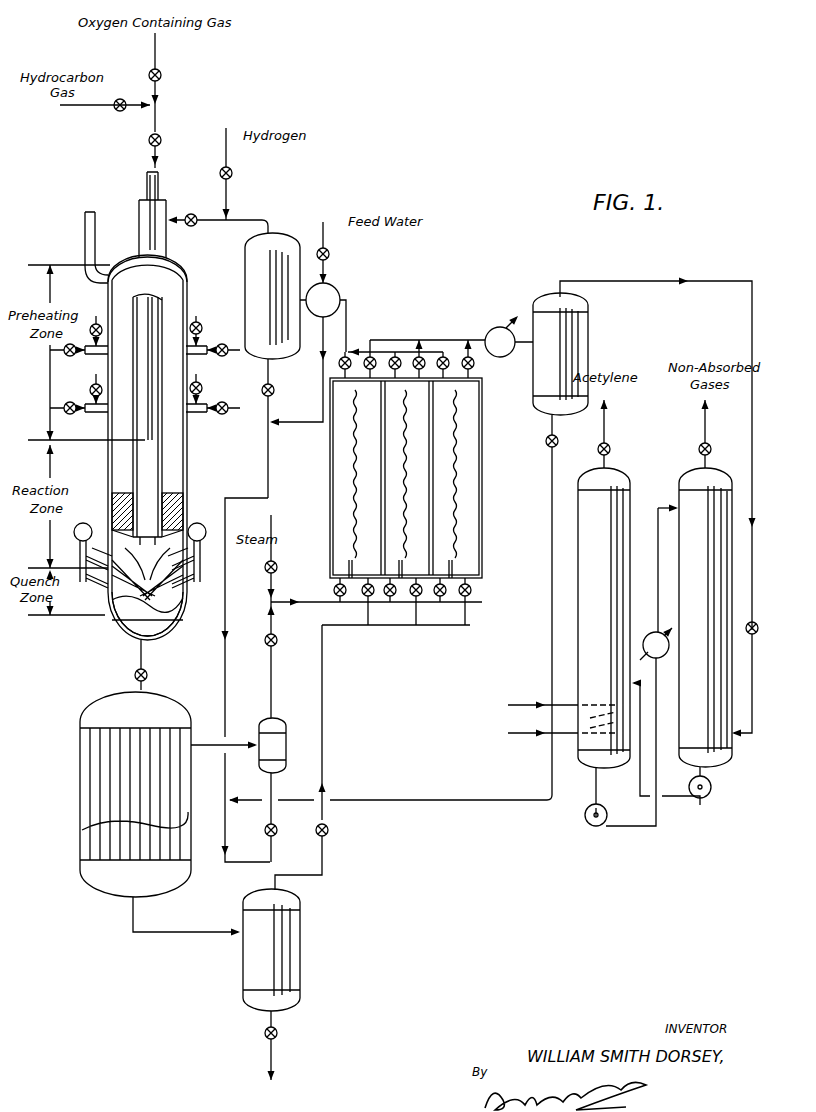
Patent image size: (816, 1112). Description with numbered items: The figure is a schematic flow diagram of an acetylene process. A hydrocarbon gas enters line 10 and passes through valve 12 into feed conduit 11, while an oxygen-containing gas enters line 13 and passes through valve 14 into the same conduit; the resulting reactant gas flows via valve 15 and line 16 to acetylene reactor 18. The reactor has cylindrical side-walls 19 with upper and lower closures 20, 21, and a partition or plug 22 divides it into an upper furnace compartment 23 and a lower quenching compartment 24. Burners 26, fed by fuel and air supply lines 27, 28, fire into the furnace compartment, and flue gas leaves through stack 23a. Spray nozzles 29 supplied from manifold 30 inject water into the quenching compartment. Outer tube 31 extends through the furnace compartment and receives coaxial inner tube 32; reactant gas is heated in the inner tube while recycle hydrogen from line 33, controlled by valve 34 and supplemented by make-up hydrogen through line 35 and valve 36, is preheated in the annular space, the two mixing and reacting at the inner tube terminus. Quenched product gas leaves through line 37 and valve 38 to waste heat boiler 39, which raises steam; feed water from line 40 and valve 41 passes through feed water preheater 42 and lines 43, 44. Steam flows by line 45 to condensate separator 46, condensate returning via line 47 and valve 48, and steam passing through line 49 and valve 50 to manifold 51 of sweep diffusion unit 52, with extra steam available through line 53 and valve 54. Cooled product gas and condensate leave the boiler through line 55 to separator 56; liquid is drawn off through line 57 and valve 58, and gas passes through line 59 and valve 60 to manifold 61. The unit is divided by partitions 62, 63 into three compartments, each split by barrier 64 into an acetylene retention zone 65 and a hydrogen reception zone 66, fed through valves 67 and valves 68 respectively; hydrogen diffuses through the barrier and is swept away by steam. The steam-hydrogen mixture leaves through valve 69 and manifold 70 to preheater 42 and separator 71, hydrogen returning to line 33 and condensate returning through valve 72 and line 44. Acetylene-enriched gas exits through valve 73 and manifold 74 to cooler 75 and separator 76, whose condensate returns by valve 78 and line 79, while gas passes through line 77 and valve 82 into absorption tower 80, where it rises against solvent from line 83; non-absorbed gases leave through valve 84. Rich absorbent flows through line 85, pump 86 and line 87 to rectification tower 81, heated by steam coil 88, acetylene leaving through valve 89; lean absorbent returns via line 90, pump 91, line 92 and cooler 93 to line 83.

The line 10 is at (63, 112).
The feed conduit 11 is at (157, 122).
The valve 12 is at (127, 97).
The line 13 is at (158, 57).
The valve 14 is at (161, 73).
The valve 15 is at (161, 138).
The line 16 is at (147, 150).
The acetylene reactor 18 is at (190, 295).
The cylindrical side-walls 19 is at (186, 443).
The upper closure 20 is at (186, 270).
The lower closure 21 is at (118, 630).
The partition or plug 22 is at (172, 492).
The furnace compartment 23 is at (165, 463).
The stack 23a is at (88, 226).
The quenching compartment 24 is at (178, 510).
The burners 26 is at (72, 360).
The fuel supply lines 27 is at (56, 410).
The air supply lines 28 is at (96, 316).
The spray nozzles 29 is at (135, 552).
The manifold 30 is at (210, 520).
The outer tube 31 is at (168, 326).
The inner tube 32 is at (142, 212).
The line 33 is at (192, 228).
The valve 34 is at (199, 203).
The line 35 is at (228, 163).
The valve 36 is at (232, 176).
The line 37 is at (143, 658).
The valve 38 is at (147, 678).
The waste heat boiler 39 is at (84, 704).
The line 40 is at (326, 244).
The valve 41 is at (329, 258).
The feed water preheater 42 is at (333, 292).
The line 43 is at (316, 370).
The line 44 is at (232, 588).
The line 45 is at (218, 725).
The condensate separator 46 is at (286, 720).
The line 47 is at (274, 790).
The valve 48 is at (277, 826).
The line 49 is at (274, 660).
The valve 50 is at (277, 634).
The manifold 51 is at (296, 588).
The sweep diffusion unit 52 is at (332, 513).
The line 53 is at (274, 544).
The valve 54 is at (277, 566).
The line 55 is at (176, 918).
The separator 56 is at (290, 916).
The line 57 is at (273, 1024).
The valve 58 is at (277, 1036).
The line 59 is at (326, 870).
The valve 60 is at (328, 830).
The manifold 61 is at (470, 625).
The longitudinal partition 62 is at (405, 474).
The longitudinal partition 63 is at (478, 428).
The screen or perforate barrier 64 is at (376, 448).
The acetylene retention zone 65 is at (370, 486).
The hydrogen reception zone 66 is at (387, 494).
The valves 67 is at (472, 590).
The valves 68 is at (338, 600).
The valve 69 is at (352, 342).
The manifold 70 is at (372, 342).
The separator 71 is at (238, 312).
The valve 72 is at (274, 390).
The valve 73 is at (467, 355).
The manifold 74 is at (458, 338).
The cooler 75 is at (508, 328).
The separator 76 is at (560, 345).
The line 77 is at (658, 270).
The valve 78 is at (546, 443).
The line 79 is at (552, 548).
The absorption tower 80 is at (724, 480).
The rectification tower 81 is at (628, 485).
The valve 82 is at (758, 624).
The line 83 is at (658, 514).
The valve 84 is at (711, 446).
The line 85 is at (711, 785).
The pump 86 is at (695, 800).
The line 87 is at (640, 798).
The steam coil 88 is at (606, 732).
The valve 89 is at (610, 447).
The line 90 is at (585, 796).
The pump 91 is at (583, 834).
The line 92 is at (661, 767).
The cooler 93 is at (652, 628).